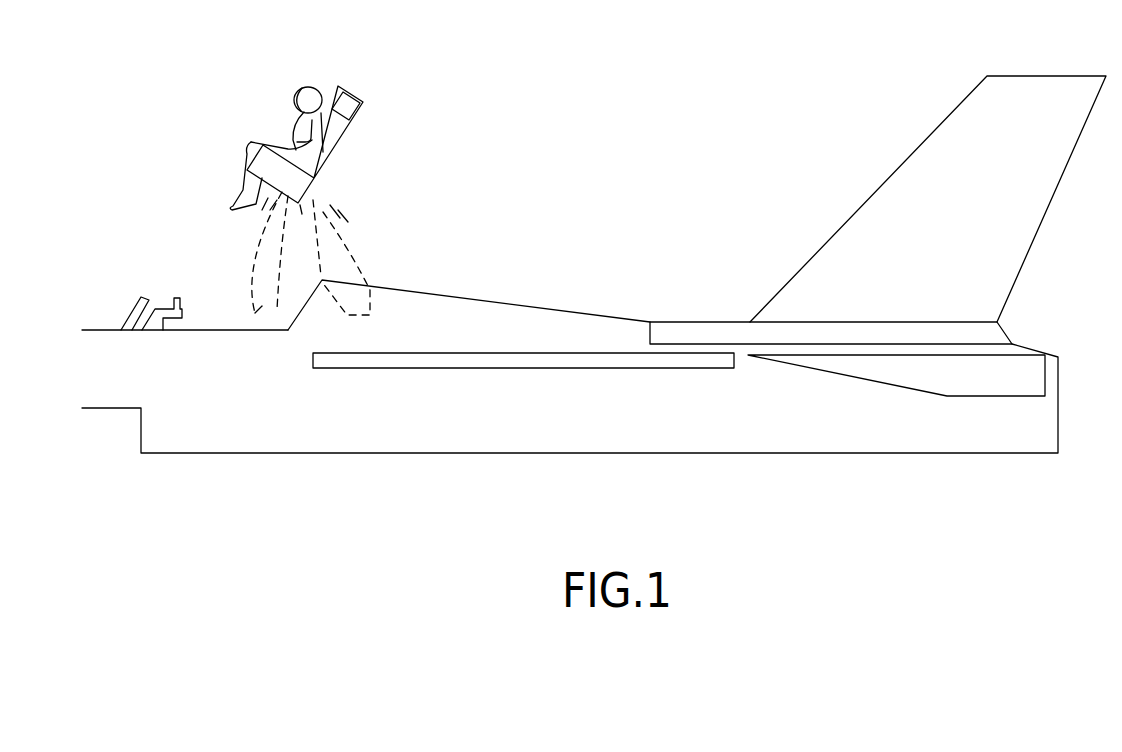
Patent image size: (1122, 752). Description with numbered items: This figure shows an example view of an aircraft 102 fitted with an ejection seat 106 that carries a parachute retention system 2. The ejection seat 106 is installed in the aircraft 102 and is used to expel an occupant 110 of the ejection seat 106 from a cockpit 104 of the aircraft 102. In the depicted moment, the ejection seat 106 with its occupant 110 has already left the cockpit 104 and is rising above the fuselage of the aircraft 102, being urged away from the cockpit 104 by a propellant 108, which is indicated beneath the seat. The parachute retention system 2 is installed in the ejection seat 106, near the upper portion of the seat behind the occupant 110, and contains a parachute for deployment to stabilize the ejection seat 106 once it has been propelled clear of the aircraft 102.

The parachute retention system 2 is at (366, 103).
The aircraft 102 is at (606, 416).
The cockpit 104 is at (205, 331).
The ejection seat 106 is at (302, 172).
The propellant 108 is at (328, 232).
The occupant 110 is at (303, 92).